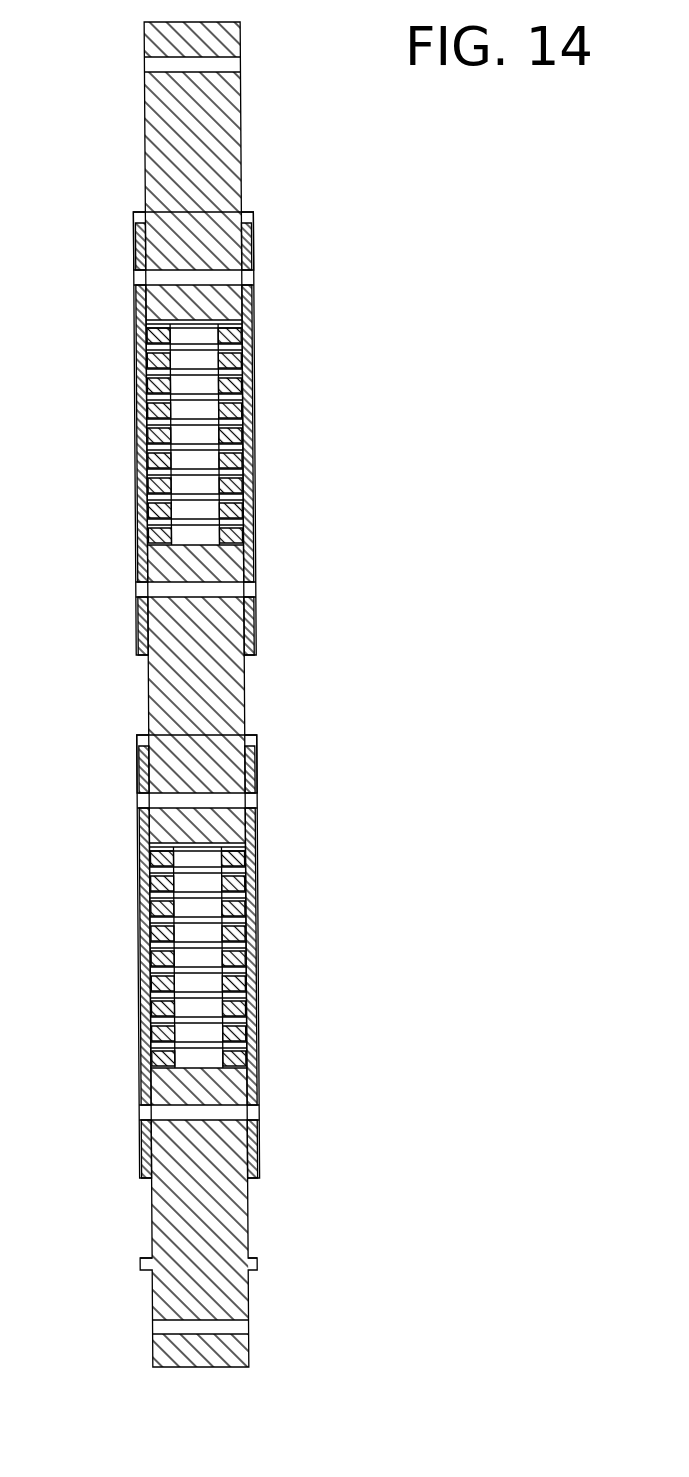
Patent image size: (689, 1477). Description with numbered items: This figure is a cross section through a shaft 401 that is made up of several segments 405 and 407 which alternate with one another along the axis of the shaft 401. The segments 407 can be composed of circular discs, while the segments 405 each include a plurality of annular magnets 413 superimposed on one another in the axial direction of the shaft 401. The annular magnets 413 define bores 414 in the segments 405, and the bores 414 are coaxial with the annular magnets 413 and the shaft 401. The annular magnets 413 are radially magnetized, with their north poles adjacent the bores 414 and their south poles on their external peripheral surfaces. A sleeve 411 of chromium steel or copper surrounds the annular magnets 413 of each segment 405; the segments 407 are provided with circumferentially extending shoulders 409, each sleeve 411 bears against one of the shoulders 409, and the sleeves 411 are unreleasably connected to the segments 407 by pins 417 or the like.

The shaft 401 is at (286, 183).
The segment 405 is at (150, 436).
The segment 407 is at (147, 44).
The shoulder 409 is at (250, 216).
The sleeve 411 is at (250, 303).
The annular magnet 413 is at (235, 385).
The bore 414 is at (235, 438).
The pin 417 is at (247, 591).